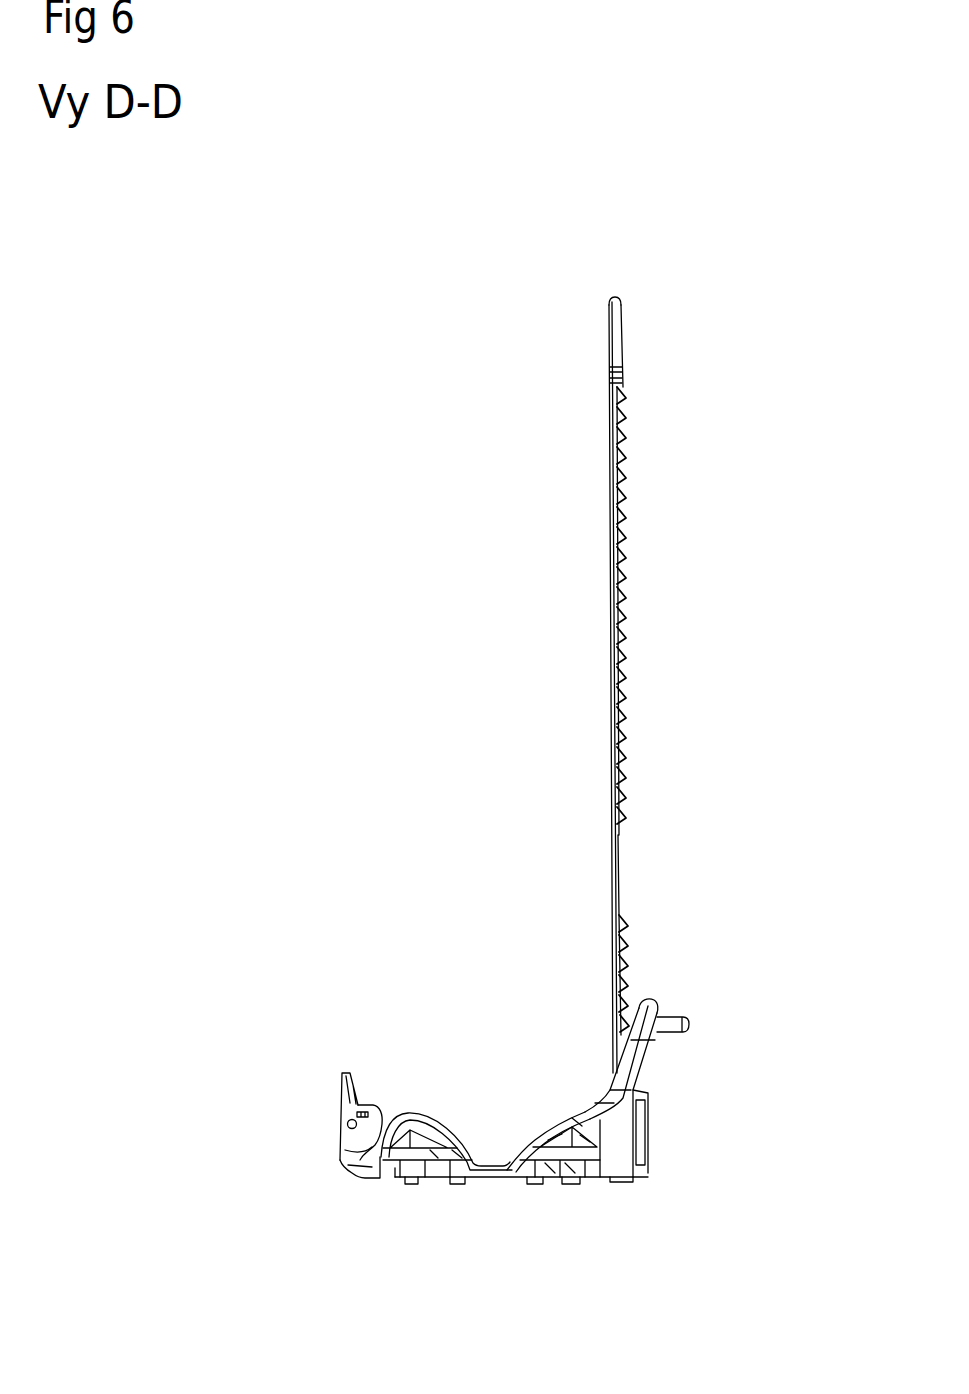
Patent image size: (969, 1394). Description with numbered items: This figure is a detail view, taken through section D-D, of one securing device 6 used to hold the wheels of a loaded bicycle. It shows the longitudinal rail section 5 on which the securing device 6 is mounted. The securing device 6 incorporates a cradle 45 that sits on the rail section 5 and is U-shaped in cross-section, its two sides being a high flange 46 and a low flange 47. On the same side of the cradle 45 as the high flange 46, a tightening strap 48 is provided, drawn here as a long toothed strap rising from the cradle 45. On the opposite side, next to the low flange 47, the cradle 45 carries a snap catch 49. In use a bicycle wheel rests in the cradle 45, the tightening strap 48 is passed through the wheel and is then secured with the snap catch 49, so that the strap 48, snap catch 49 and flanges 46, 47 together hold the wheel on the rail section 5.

The tightening strap 48 is at (625, 697).
The high flange 46 is at (650, 1052).
The cradle 45 is at (457, 1130).
The low flange 47 is at (420, 1113).
The securing device 6 is at (340, 1121).
The snap catch 49 is at (350, 1167).
The longitudinal rail section 5 is at (515, 1183).